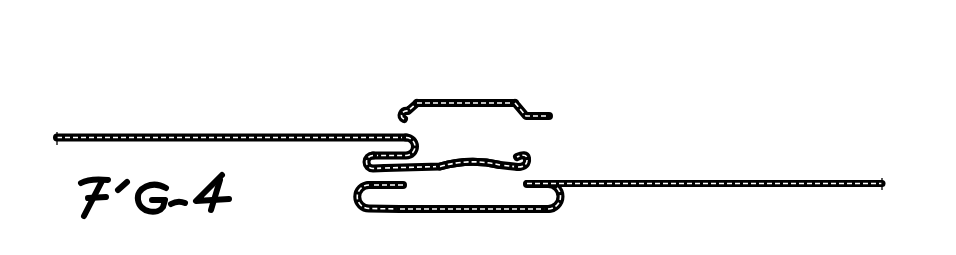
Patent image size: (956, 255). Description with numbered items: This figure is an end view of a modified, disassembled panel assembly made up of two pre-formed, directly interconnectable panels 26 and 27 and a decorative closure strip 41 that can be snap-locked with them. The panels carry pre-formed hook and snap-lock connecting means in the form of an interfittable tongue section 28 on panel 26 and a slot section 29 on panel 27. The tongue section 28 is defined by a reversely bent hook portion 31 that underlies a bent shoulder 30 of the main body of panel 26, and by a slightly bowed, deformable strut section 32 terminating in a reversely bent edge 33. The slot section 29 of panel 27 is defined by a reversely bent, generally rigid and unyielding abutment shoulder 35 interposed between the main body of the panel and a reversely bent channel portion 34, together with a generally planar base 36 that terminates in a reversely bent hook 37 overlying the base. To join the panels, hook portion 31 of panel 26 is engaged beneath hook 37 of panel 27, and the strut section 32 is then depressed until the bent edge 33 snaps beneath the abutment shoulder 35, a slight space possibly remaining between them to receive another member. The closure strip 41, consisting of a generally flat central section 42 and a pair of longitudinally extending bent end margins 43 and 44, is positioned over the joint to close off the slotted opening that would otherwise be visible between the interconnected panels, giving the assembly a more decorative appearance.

The panel 26 is at (231, 117).
The panel 27 is at (704, 167).
The tongue section 28 is at (473, 145).
The slot section 29 is at (478, 212).
The bent shoulder 30 is at (405, 137).
The reversely bent hook portion 31 is at (349, 173).
The deformable strut section 32 is at (470, 150).
The reversely bent edge 33 is at (539, 152).
The reversely bent channel portion 34 is at (574, 207).
The abutment shoulder 35 is at (515, 189).
The planar base 36 is at (395, 216).
The reversely bent hook 37 is at (404, 185).
The closure strip 41 is at (479, 83).
The flat central section 42 is at (466, 81).
The bent end margin 43 is at (403, 94).
The bent end margin 44 is at (542, 96).